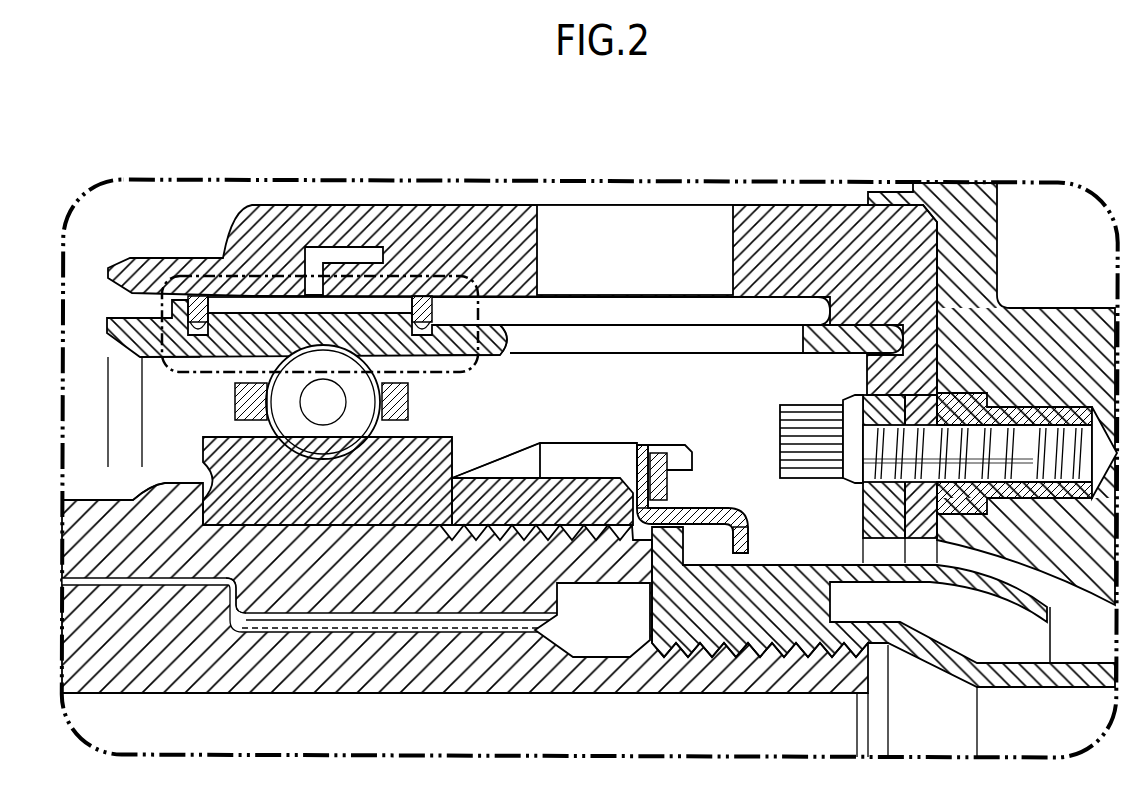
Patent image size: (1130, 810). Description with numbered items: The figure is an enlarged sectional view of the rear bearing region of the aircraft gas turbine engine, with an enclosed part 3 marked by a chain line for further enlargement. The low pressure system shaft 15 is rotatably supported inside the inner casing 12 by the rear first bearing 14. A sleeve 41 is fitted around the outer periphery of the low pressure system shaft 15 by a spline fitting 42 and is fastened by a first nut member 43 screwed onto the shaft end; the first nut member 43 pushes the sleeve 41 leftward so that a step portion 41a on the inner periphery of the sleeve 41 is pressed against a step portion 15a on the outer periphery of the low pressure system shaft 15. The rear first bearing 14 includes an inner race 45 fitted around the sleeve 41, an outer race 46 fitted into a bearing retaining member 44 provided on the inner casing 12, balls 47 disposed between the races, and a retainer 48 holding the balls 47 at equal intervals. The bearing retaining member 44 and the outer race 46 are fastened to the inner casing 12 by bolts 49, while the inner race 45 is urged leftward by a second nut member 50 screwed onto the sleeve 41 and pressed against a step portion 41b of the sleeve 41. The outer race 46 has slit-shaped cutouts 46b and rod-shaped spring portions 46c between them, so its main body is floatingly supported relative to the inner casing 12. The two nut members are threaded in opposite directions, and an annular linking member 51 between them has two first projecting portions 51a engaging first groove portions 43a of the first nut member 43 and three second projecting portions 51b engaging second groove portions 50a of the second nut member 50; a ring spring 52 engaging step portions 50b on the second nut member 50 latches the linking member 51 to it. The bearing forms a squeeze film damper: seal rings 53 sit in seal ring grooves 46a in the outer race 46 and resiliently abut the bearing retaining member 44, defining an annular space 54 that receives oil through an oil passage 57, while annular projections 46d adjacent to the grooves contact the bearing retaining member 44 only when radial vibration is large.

The enlarged part 3 is at (222, 264).
The inner casing 12 is at (983, 263).
The rear first bearing 14 is at (450, 420).
The low pressure system shaft 15 is at (448, 695).
The step portion 15a is at (250, 610).
The sleeve 41 is at (118, 500).
The step portion 41a is at (236, 604).
The step portion 41b is at (203, 437).
The spline fitting 42 is at (383, 624).
The first nut member 43 is at (807, 563).
The first groove portions 43a is at (632, 580).
The bearing retaining member 44 is at (453, 200).
The inner race 45 is at (453, 455).
The outer race 46 is at (268, 312).
The seal ring grooves 46a is at (198, 334).
The cutouts 46b is at (510, 338).
The spring portions 46c is at (678, 343).
The annular projections 46d is at (180, 310).
The balls 47 is at (338, 416).
The retainer 48 is at (250, 398).
The bolts 49 is at (803, 433).
The second nut member 50 is at (580, 433).
The second groove portions 50a is at (543, 470).
The step portions 50b is at (667, 470).
The linking member 51 is at (707, 510).
The first projecting portions 51a is at (778, 536).
The second projecting portions 51b is at (637, 463).
The ring spring 52 is at (658, 452).
The seal rings 53 is at (196, 300).
The annular space 54 is at (286, 298).
The oil passage 57 is at (355, 257).